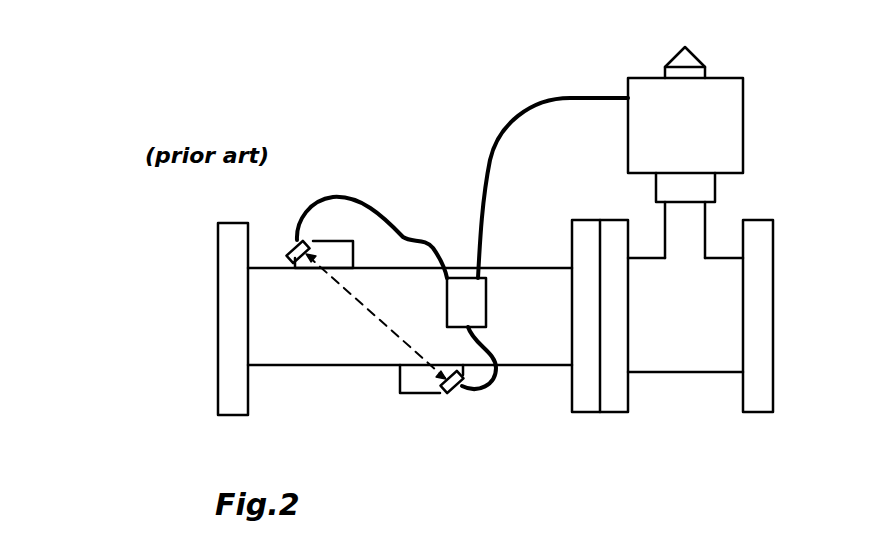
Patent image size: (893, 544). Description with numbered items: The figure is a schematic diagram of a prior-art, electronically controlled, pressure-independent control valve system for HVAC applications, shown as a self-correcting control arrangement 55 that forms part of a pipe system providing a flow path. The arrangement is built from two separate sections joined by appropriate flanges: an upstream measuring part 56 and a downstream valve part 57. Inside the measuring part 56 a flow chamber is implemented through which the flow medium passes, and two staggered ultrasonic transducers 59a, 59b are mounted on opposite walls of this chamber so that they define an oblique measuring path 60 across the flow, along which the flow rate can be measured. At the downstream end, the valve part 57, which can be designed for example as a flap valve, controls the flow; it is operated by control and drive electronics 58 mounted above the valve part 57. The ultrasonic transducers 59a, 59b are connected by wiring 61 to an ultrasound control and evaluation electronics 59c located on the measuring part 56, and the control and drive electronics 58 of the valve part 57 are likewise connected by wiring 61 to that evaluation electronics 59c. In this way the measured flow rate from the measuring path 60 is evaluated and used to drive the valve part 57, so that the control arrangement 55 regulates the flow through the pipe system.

The self-correcting control arrangement 55 is at (447, 192).
The measuring part 56 is at (600, 420).
The valve part 57 is at (773, 420).
The control and drive electronics 58 is at (685, 152).
The ultrasonic transducer 59a is at (290, 250).
The ultrasonic transducer 59b is at (447, 392).
The ultrasound control and evaluation electronics 59c is at (468, 308).
The measuring path 60 is at (373, 317).
The wiring 61 is at (531, 114).